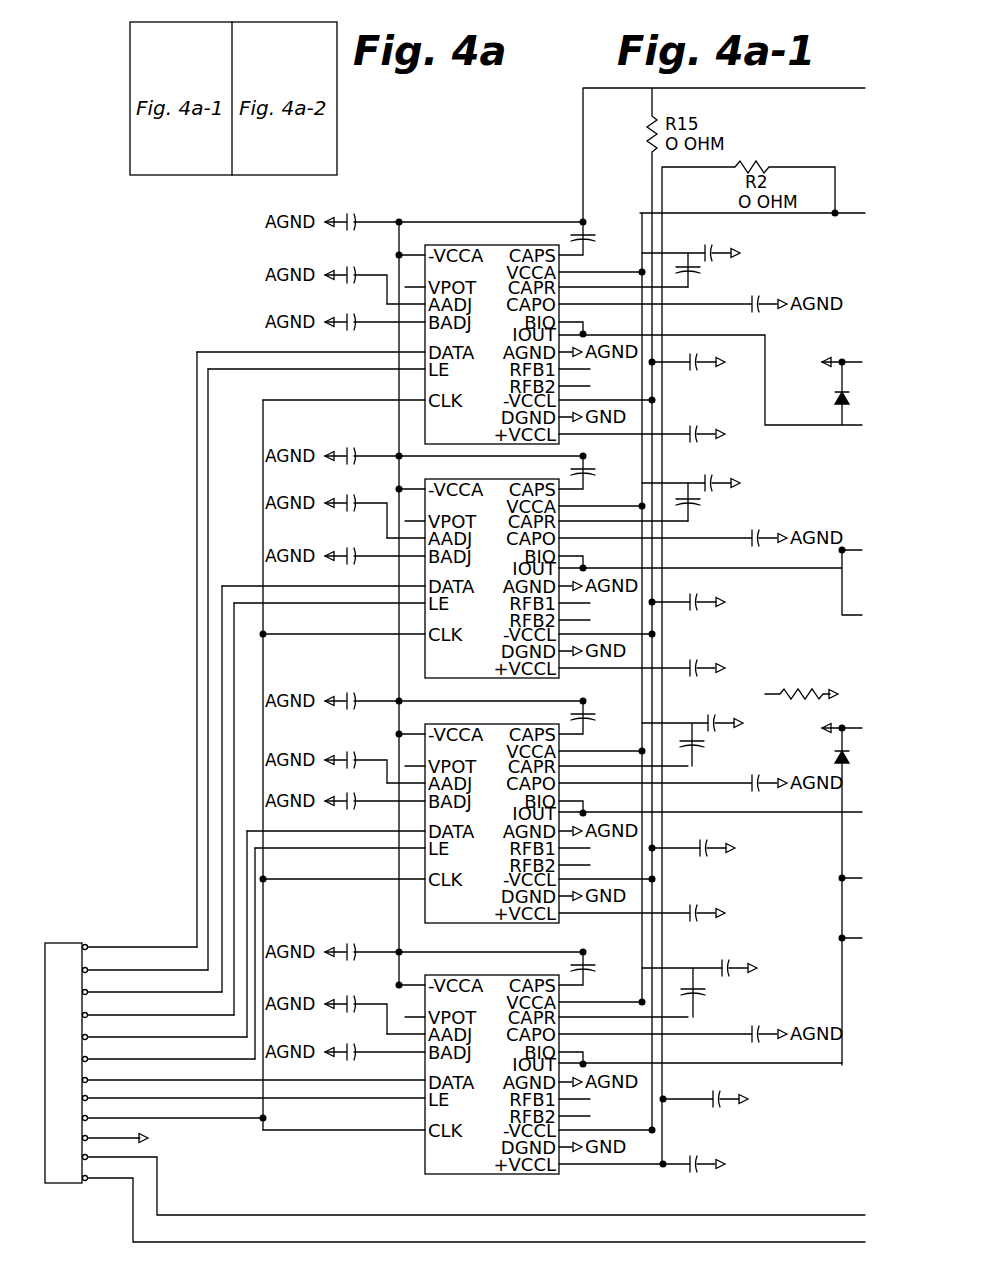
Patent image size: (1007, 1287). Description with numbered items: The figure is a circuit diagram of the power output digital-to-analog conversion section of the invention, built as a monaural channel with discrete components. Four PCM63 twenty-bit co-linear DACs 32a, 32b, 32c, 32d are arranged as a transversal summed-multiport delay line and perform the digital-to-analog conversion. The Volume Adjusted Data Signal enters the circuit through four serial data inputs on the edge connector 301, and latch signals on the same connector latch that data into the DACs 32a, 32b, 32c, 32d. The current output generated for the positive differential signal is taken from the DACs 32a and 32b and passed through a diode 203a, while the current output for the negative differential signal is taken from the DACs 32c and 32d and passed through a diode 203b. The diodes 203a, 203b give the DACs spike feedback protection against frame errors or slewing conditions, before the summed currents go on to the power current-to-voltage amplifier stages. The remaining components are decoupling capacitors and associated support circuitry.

The DAC 32a is at (562, 1178).
The DAC 32b is at (427, 724).
The DAC 32c is at (423, 486).
The DAC 32d is at (488, 244).
The diode 203a is at (850, 765).
The diode 203b is at (840, 410).
The edge connector 301 is at (46, 1186).